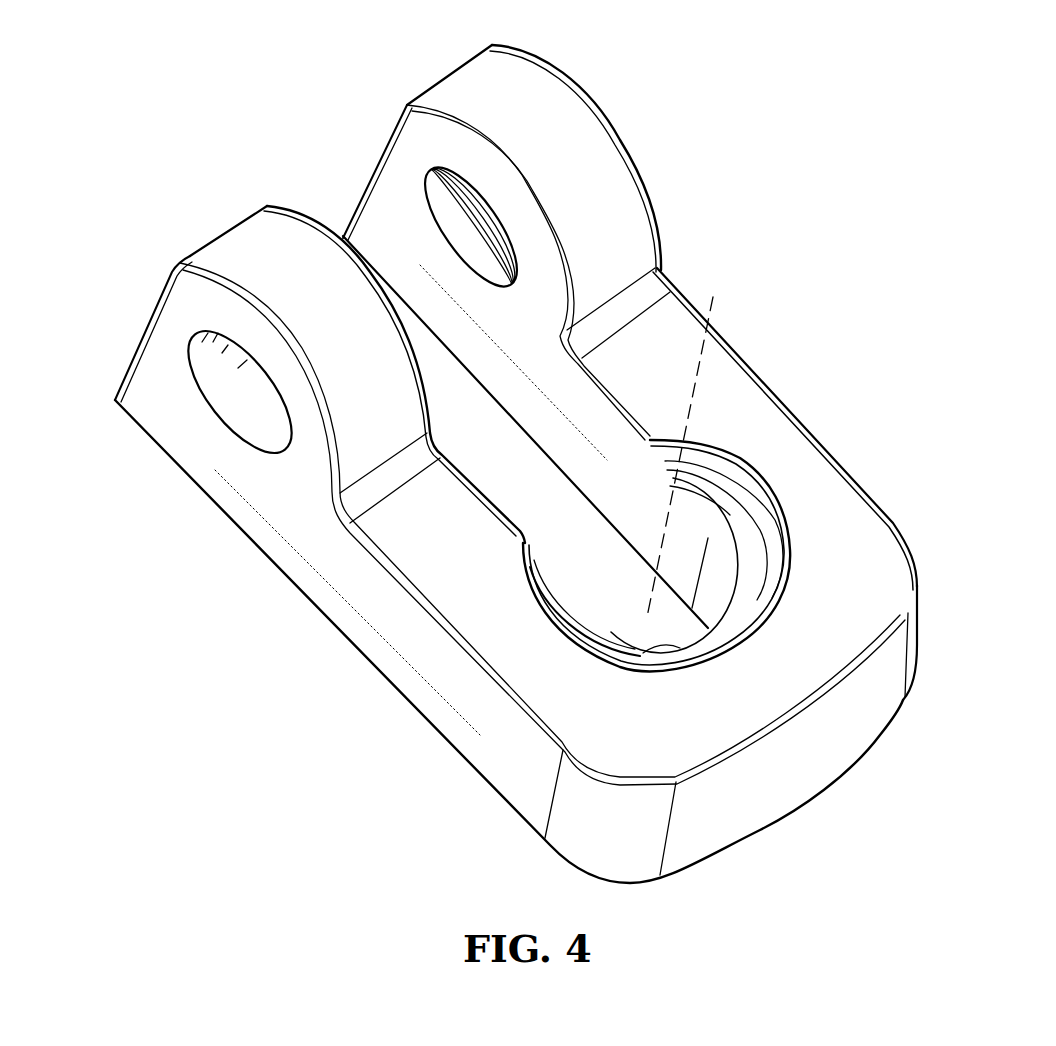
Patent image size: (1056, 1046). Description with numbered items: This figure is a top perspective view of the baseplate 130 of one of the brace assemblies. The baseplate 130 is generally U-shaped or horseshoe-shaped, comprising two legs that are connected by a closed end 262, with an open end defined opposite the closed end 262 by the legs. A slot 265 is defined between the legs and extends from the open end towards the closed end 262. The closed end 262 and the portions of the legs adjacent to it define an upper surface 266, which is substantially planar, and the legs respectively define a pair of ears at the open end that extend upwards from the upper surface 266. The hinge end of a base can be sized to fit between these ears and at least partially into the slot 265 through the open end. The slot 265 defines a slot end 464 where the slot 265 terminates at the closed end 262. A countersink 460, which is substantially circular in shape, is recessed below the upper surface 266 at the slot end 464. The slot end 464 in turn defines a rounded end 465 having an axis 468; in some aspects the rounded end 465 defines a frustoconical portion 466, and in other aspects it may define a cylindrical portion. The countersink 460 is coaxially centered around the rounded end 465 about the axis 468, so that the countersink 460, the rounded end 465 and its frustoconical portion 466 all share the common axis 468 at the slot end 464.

The baseplate 130 is at (209, 125).
The closed end 262 is at (860, 730).
The slot 265 is at (538, 469).
The upper surface 266 is at (470, 592).
The countersink 460 is at (733, 637).
The slot end 464 is at (645, 650).
The rounded end 465 is at (843, 520).
The frustoconical portion 466 is at (710, 590).
The axis 468 is at (690, 413).